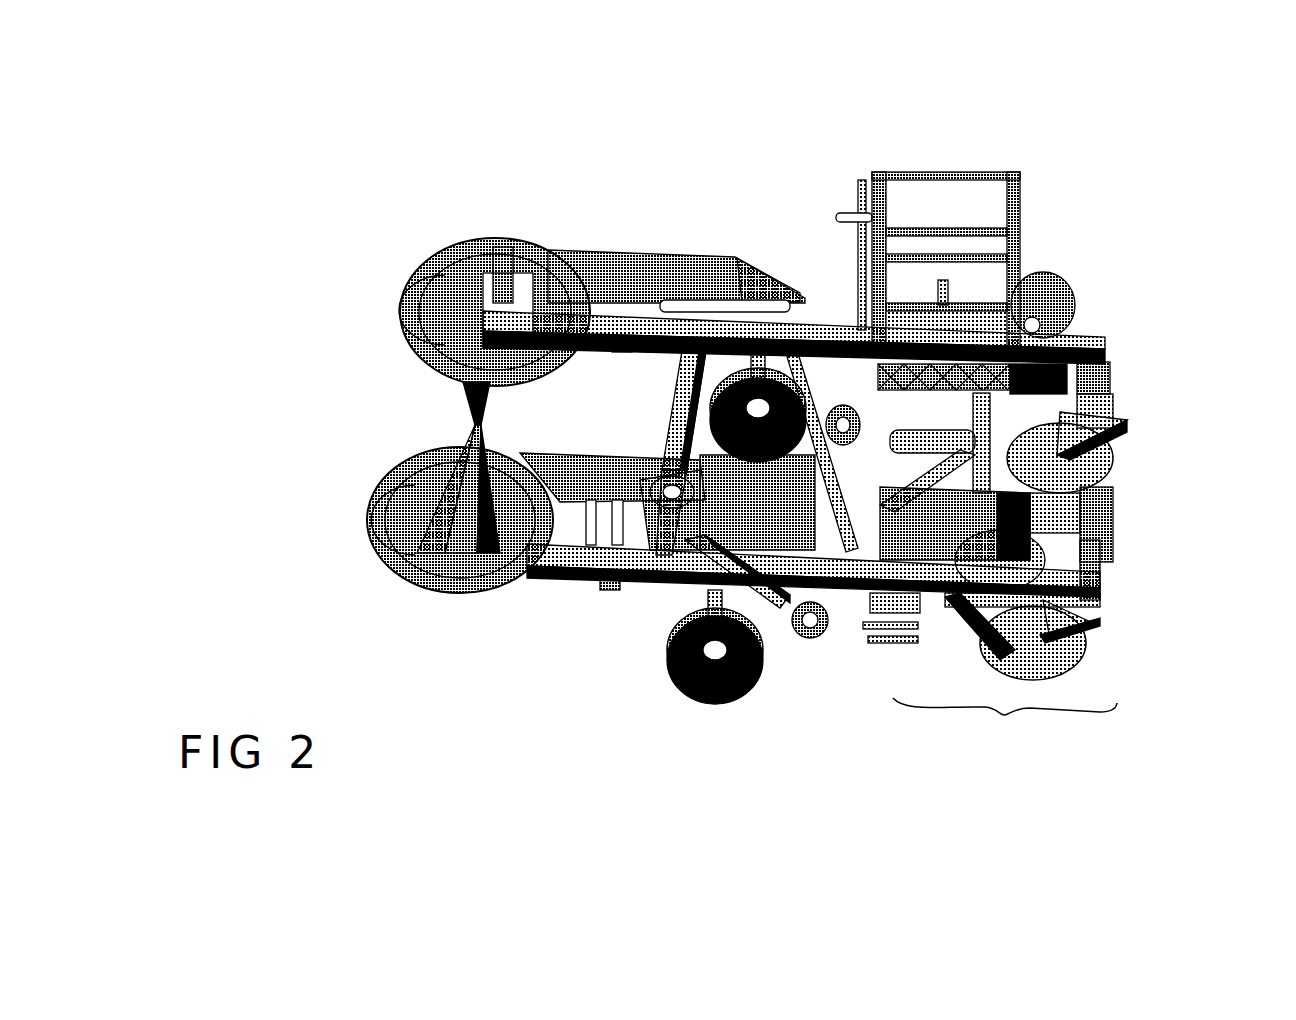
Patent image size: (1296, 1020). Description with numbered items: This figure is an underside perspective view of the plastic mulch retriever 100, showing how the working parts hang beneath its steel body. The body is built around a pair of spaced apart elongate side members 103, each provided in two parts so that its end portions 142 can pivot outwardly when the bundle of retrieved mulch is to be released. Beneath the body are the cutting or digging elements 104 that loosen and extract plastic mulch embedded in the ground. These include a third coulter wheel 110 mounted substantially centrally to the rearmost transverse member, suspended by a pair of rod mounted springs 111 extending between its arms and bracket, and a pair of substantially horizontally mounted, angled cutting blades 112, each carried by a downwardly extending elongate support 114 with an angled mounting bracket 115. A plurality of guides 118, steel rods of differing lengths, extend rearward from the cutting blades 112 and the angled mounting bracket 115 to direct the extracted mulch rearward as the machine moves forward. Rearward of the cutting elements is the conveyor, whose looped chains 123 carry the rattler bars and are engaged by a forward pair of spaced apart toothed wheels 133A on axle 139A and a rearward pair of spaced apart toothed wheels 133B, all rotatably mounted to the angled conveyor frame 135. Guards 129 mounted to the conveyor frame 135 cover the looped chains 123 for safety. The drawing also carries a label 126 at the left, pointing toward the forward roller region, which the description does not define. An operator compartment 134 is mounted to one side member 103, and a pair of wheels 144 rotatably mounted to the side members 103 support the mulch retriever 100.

The plastic mulch retriever 100 is at (1132, 104).
The elongate side member 103 is at (1070, 342).
The cutting or digging elements 104 is at (1005, 737).
The third coulter wheel 110 is at (1050, 560).
The rod mounted spring 111 is at (1130, 412).
The cutting blade 112 is at (1045, 576).
The elongate support 114 is at (1045, 458).
The angled mounting bracket 115 is at (1045, 538).
The guides 118 is at (878, 642).
The looped chains 123 is at (828, 322).
The seed metering assembly 126 is at (322, 400).
The guards 129 is at (612, 248).
The forward pair of spaced apart toothed wheels 133A is at (858, 430).
The rearward pair of spaced apart toothed wheels 133B is at (652, 480).
The compartment 134 is at (935, 172).
The conveyor frame 135 is at (705, 558).
The axle 139A is at (880, 643).
The end portions 142 is at (622, 350).
The wheels 144 is at (693, 693).